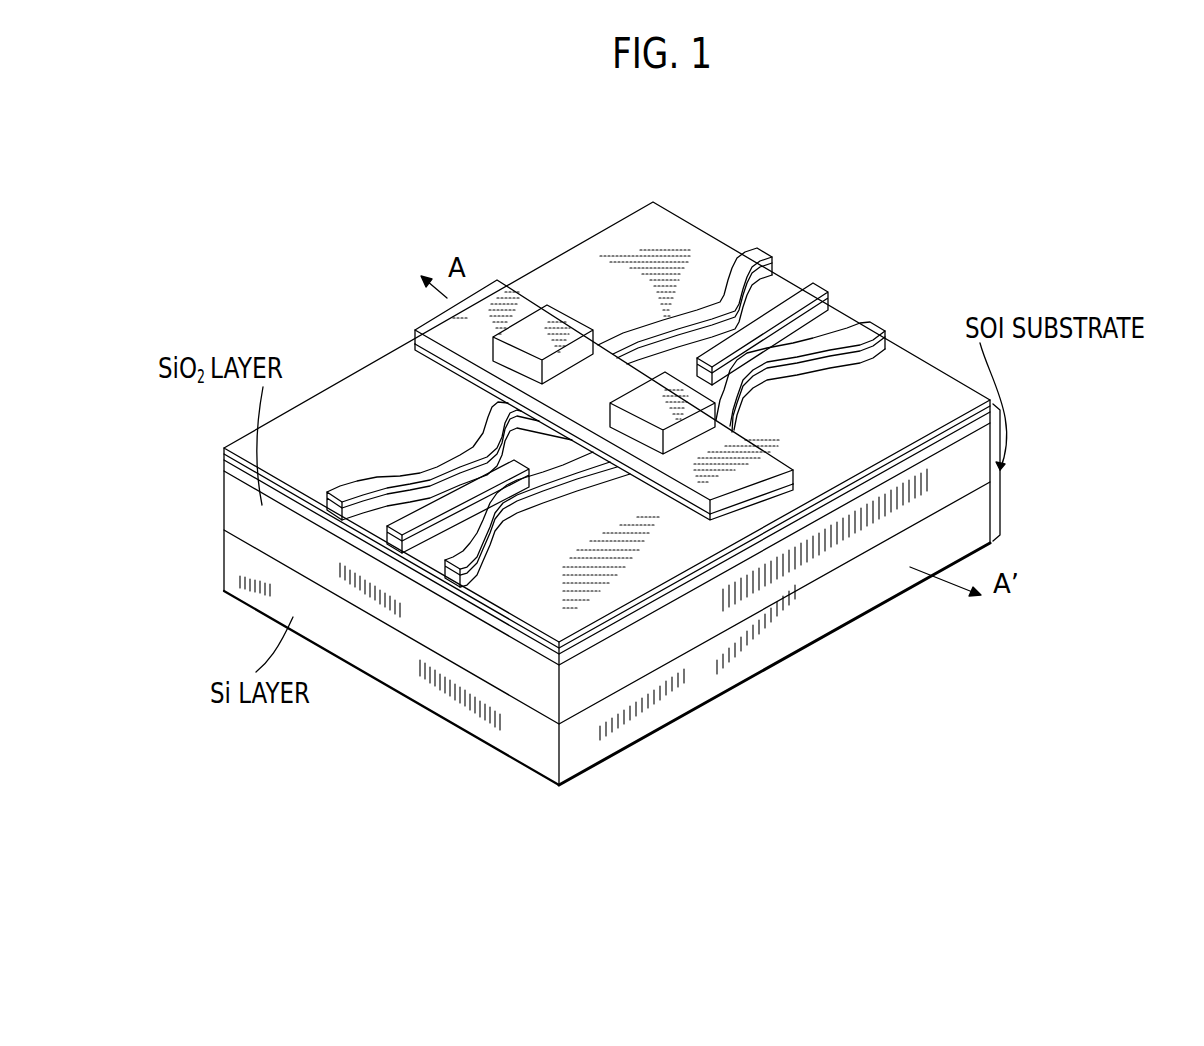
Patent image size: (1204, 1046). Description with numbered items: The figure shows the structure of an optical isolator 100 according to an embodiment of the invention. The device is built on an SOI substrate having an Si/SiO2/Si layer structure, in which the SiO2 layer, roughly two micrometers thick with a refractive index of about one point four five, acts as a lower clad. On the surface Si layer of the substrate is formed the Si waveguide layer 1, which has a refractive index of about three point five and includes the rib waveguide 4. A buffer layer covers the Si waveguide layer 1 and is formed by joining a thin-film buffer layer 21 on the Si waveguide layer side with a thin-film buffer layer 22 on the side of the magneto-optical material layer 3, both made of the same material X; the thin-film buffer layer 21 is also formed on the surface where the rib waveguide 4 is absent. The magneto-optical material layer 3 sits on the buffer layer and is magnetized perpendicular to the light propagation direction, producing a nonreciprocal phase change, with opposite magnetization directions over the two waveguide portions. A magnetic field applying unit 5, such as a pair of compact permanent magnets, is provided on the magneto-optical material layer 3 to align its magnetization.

The optical isolator 100 is at (815, 868).
The Si waveguide layer 1 is at (506, 624).
The magneto-optical material layer 3 is at (792, 455).
The rib waveguide 4 is at (378, 478).
The magnetic field applying unit 5 is at (663, 402).
The thin-film buffer layer 21 is at (913, 285).
The thin-film buffer layer 22 is at (750, 497).